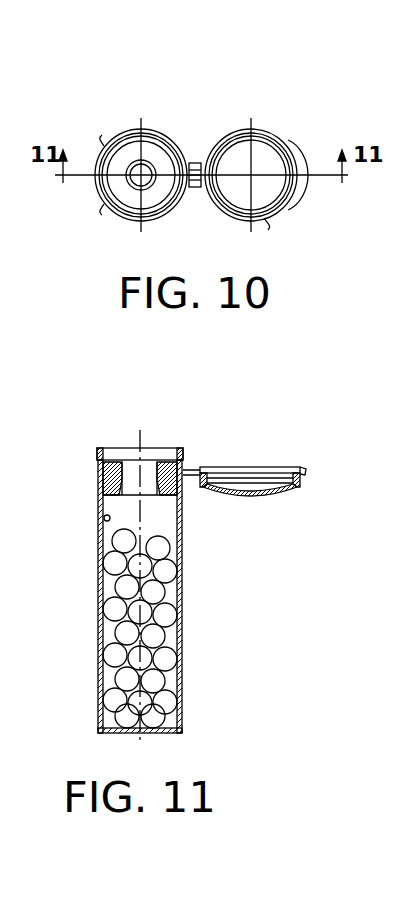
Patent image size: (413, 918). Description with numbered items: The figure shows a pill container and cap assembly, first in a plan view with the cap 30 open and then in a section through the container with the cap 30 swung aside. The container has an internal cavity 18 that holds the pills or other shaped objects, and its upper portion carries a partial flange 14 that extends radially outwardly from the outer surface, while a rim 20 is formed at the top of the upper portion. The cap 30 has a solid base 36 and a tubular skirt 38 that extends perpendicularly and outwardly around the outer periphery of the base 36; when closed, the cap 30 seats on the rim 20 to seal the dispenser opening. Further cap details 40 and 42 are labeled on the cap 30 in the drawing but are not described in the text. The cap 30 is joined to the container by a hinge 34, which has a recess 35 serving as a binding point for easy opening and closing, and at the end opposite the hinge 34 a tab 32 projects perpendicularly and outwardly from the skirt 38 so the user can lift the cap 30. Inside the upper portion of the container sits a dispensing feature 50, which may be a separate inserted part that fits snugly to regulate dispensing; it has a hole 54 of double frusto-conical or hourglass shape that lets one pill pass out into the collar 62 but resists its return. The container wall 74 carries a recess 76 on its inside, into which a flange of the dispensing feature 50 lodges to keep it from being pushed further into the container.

In FIG. 10, the partial flange 14 is at (163, 128).
In FIG. 11, the partial flange 14 is at (100, 472).
In FIG. 10, the internal cavity 18 is at (118, 197).
In FIG. 11, the internal cavity 18 is at (115, 505).
In FIG. 11, the rim 20 is at (185, 455).
In FIG. 10, the cap 30 is at (113, 133).
In FIG. 11, the cap 30 is at (281, 497).
In FIG. 10, the tab 32 is at (302, 165).
In FIG. 11, the tab 32 is at (305, 468).
In FIG. 10, the hinge 34 is at (194, 198).
In FIG. 11, the hinge 34 is at (192, 482).
In FIG. 10, the recess 35 is at (192, 161).
In FIG. 11, the recess 35 is at (204, 467).
In FIG. 10, the solid base 36 is at (248, 170).
In FIG. 11, the solid base 36 is at (249, 494).
In FIG. 10, the tubular skirt 38 is at (258, 130).
In FIG. 11, the tubular skirt 38 is at (300, 483).
In FIG. 10, the cap bottom wall 40 is at (264, 196).
In FIG. 11, the cap bottom wall 40 is at (257, 496).
In FIG. 11, the cap outer surface 42 is at (252, 497).
In FIG. 11, the dispensing feature 50 is at (166, 470).
In FIG. 11, the hole 54 is at (132, 478).
In FIG. 10, the collar 62 is at (146, 164).
In FIG. 11, the container wall 74 is at (102, 520).
In FIG. 11, the recess 76 is at (108, 452).